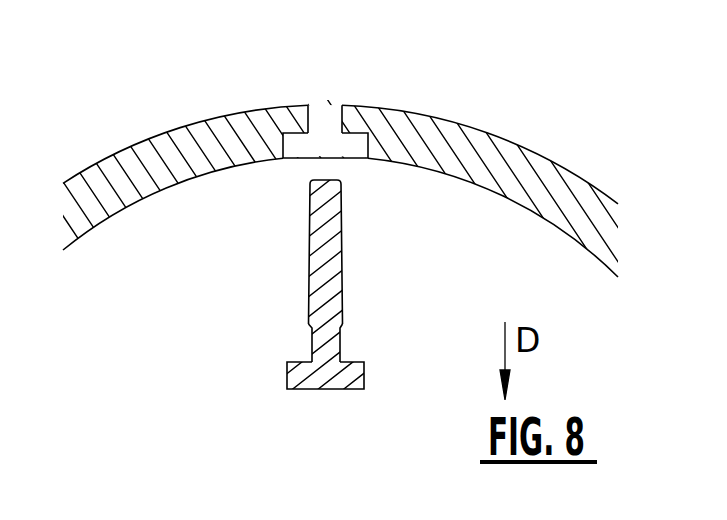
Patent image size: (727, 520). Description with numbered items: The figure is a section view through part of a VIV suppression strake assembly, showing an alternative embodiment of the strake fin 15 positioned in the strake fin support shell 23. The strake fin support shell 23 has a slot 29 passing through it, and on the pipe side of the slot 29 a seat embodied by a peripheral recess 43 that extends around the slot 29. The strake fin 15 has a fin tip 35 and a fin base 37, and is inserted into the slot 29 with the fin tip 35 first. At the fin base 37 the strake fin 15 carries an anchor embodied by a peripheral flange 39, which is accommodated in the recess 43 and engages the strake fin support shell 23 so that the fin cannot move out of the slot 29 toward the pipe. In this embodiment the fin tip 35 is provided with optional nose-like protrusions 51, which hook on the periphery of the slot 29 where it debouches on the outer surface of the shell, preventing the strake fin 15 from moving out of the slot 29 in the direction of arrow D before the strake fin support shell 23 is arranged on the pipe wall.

The strake fin 15 is at (304, 297).
The strake fin support shell 23 is at (227, 128).
The slot 29 is at (322, 115).
The fin tip 35 is at (322, 246).
The fin base 37 is at (307, 297).
The peripheral flange 39 is at (348, 378).
The peripheral recess 43 is at (357, 177).
The nose-like protrusions 51 is at (308, 331).